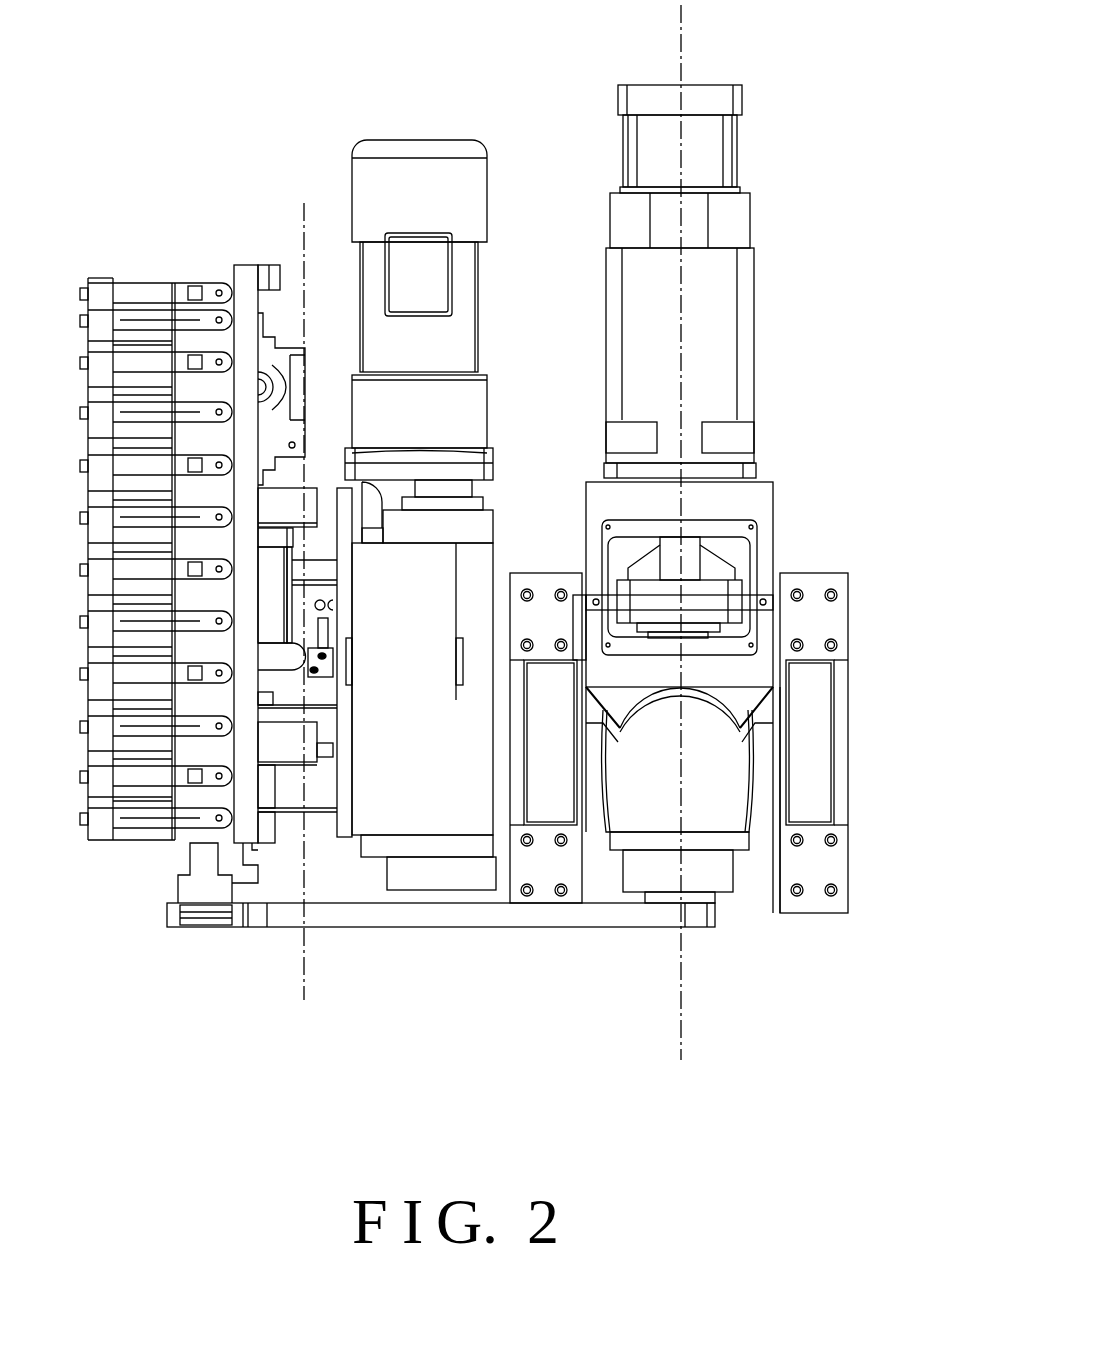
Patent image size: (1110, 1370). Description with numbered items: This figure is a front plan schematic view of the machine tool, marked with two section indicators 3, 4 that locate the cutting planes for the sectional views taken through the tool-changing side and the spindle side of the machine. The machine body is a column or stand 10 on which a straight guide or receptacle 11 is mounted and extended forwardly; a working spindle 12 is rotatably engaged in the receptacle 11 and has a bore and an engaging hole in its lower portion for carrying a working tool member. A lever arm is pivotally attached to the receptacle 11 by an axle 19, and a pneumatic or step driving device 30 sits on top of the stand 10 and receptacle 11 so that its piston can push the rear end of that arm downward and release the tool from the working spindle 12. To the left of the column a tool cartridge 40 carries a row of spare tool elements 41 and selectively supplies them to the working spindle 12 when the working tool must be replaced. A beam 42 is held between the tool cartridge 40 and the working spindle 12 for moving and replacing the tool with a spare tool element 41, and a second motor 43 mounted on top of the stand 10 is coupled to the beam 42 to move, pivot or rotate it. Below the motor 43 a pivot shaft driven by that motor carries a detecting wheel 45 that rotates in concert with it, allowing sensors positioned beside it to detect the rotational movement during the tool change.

The section line 3- 3 is at (303, 217).
The section line 4- 4 is at (683, 30).
The stand 10 is at (833, 618).
The receptacle 11 is at (820, 795).
The working spindle 12 is at (723, 877).
The axle 19 is at (765, 590).
The driving device 30 is at (755, 352).
The tool cartridge 40 is at (238, 275).
The spare tool element 41 is at (178, 889).
The beam 42 is at (492, 915).
The motor 43 is at (395, 177).
The detecting wheel 45 is at (322, 707).